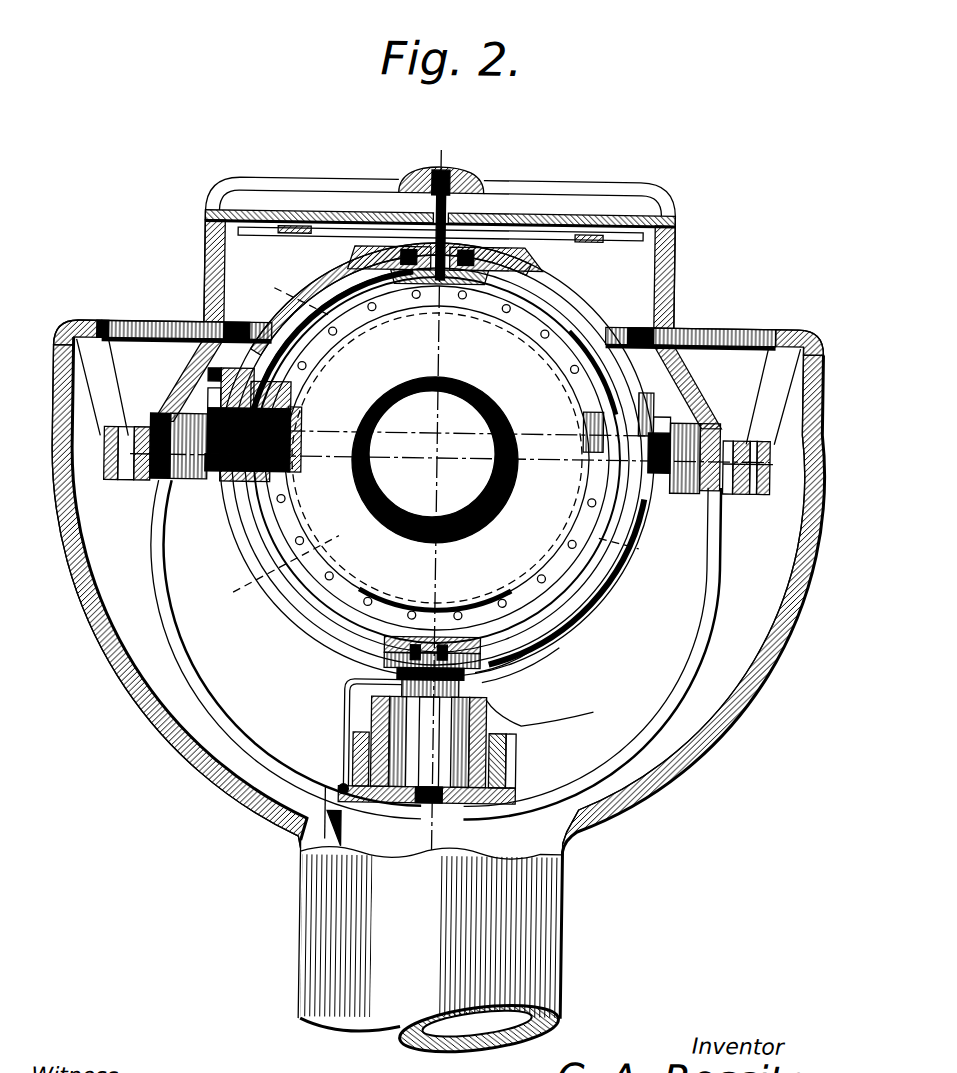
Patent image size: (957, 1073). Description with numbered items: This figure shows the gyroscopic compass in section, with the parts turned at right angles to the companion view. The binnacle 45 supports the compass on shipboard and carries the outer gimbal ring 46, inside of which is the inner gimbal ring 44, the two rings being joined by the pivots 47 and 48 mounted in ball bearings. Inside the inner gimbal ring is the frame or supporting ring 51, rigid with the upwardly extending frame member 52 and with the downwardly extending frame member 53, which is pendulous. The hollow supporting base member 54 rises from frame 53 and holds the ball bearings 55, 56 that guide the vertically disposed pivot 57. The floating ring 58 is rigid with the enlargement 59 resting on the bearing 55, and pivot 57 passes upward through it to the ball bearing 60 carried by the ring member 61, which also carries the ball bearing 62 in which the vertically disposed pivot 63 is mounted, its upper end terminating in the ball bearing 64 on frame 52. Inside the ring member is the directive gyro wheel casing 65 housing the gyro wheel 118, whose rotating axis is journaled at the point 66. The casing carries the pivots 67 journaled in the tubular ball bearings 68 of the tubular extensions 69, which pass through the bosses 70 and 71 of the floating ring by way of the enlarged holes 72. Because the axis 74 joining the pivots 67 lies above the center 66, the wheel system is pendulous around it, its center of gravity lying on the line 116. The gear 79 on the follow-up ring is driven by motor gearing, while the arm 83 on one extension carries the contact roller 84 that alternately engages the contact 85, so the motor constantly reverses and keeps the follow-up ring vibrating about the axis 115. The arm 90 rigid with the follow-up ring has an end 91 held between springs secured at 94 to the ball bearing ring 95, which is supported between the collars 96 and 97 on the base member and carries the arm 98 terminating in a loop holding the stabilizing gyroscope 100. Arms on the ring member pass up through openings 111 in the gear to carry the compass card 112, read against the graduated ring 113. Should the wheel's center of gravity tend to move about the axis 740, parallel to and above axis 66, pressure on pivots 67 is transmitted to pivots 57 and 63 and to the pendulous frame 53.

The inner gimbal ring 44 is at (138, 485).
The binnacle 45 is at (92, 630).
The outer gimbal ring 46 is at (110, 485).
The pivot 47 is at (757, 460).
The pivot 48 is at (207, 425).
The frame or supporting ring 51 is at (723, 440).
The upwardly extending frame member 52 is at (598, 182).
The downwardly extending frame member 53 is at (196, 696).
The hollow supporting base member 54 is at (510, 745).
The ball bearing 55 is at (490, 712).
The ball bearing 56 is at (442, 806).
The vertically disposed pivot 57 is at (445, 640).
The floating ring 58 is at (327, 277).
The enlargement 59 is at (372, 718).
The ball bearing 60 is at (440, 636).
The ring member 61 is at (270, 537).
The ball bearing 62 is at (440, 286).
The vertically disposed pivot 63 is at (432, 213).
The ball bearing 64 is at (478, 190).
The directive gyro wheel casing 65 is at (557, 347).
The wheel axis center 66 is at (438, 459).
The pivot 67 is at (300, 420).
The tubular ball bearing 68 is at (237, 485).
The tubular extension 69 is at (185, 483).
The boss 70 is at (255, 384).
The boss 71 is at (645, 390).
The enlarged hole 72 is at (277, 377).
The axis 74 is at (368, 422).
The gear 79 is at (276, 235).
The arm 83 is at (100, 325).
The contact roller 84 is at (207, 380).
The contact 85 is at (212, 398).
The arm 90 is at (345, 683).
The end 91 is at (345, 785).
The securing point 94 is at (355, 775).
The ball bearing ring 95 is at (511, 765).
The collar 96 is at (553, 710).
The collar 97 is at (512, 787).
The arm 98 is at (525, 670).
The stabilizing gyroscope 100 is at (540, 655).
The opening 111 is at (520, 231).
The compass card 112 is at (285, 213).
The ring 113 is at (233, 213).
The axis 115 is at (440, 162).
The line 116 is at (545, 460).
The gyro wheel 118 is at (439, 447).
The axis 740 is at (437, 433).